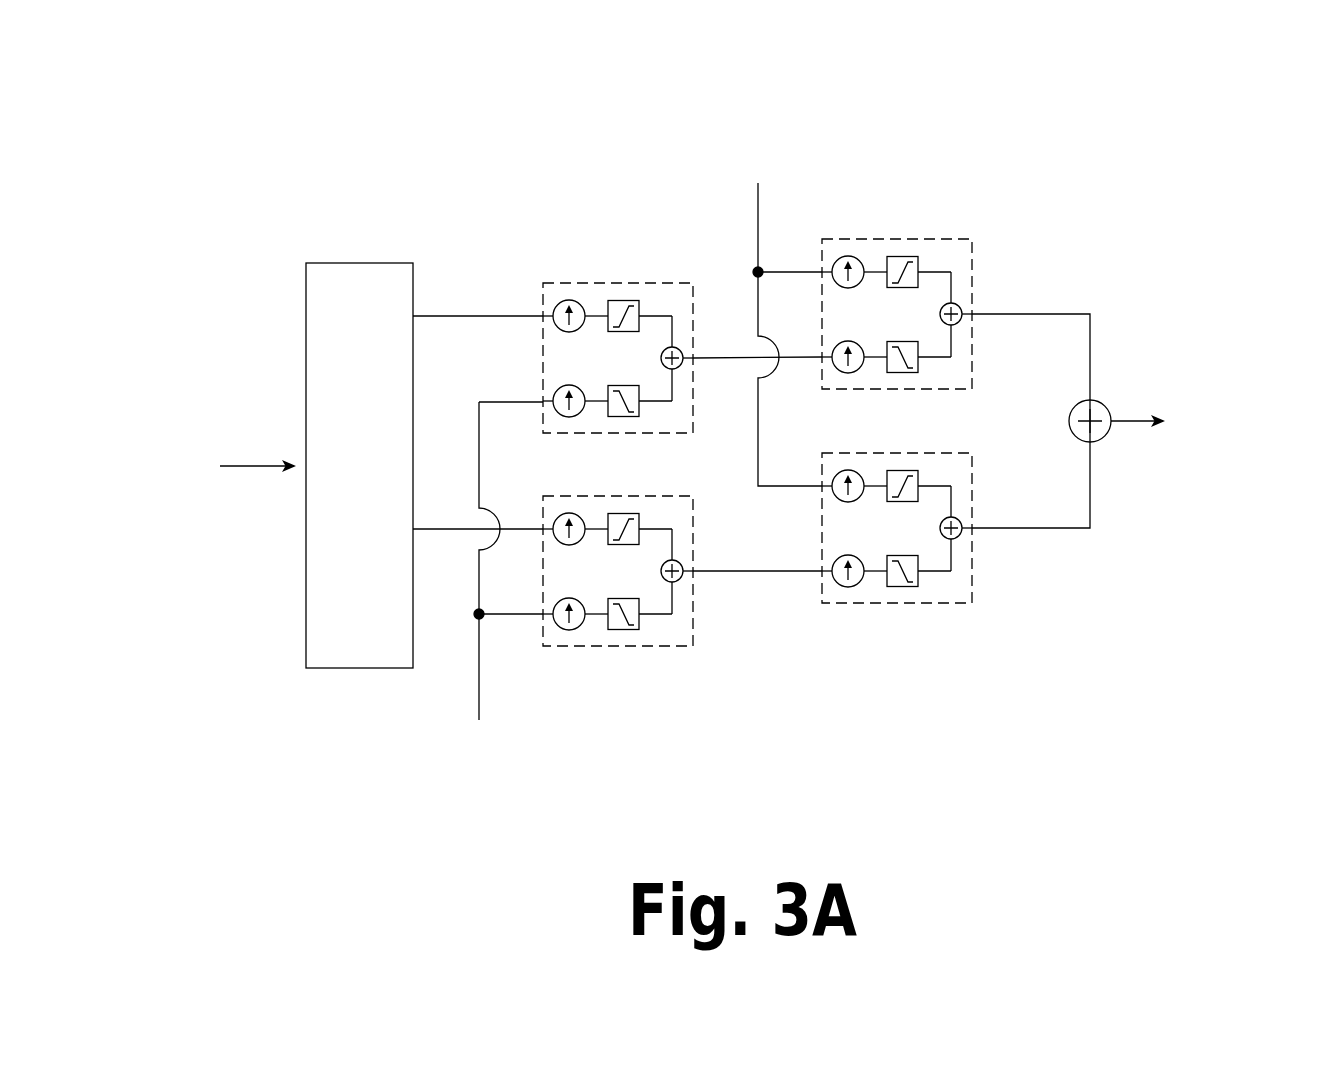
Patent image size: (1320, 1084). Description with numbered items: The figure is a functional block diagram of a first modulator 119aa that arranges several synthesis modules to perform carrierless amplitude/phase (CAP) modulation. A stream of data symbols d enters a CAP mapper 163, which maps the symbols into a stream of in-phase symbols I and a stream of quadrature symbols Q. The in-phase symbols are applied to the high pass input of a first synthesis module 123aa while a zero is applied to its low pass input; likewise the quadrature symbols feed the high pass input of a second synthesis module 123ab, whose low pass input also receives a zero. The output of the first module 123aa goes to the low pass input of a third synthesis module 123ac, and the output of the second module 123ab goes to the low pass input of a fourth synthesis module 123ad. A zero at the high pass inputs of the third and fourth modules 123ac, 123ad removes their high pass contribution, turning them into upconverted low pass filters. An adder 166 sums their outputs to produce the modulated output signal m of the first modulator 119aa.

The first modulator 119aa is at (1156, 144).
The CAP mapper 163 is at (359, 252).
The first synthesis module 123aa is at (626, 275).
The second synthesis module 123ab is at (621, 656).
The third synthesis module 123ac is at (886, 230).
The fourth synthesis module 123ad is at (901, 612).
The adder 166 is at (1106, 392).